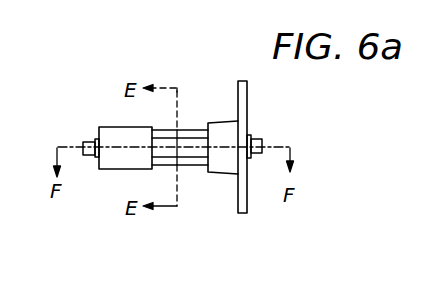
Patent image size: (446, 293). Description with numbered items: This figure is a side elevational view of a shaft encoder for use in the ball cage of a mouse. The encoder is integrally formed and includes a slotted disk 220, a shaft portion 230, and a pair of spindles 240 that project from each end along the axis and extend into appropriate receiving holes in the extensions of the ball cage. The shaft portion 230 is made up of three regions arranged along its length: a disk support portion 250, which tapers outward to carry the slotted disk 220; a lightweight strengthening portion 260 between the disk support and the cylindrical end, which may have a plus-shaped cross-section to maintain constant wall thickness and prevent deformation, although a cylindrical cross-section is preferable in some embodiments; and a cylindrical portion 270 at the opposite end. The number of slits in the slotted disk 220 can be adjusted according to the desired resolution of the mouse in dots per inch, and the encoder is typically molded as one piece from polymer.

The slotted disk 220 is at (247, 98).
The shaft portion 230 is at (188, 130).
The spindles 240 is at (88, 142).
The disk support portion 250 is at (218, 173).
The lightweight strengthening portion 260 is at (193, 165).
The cylindrical portion 270 is at (122, 169).